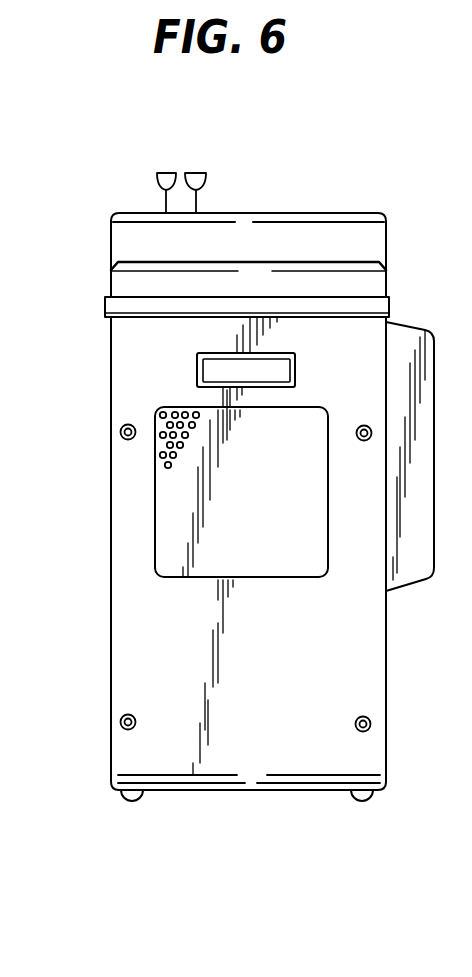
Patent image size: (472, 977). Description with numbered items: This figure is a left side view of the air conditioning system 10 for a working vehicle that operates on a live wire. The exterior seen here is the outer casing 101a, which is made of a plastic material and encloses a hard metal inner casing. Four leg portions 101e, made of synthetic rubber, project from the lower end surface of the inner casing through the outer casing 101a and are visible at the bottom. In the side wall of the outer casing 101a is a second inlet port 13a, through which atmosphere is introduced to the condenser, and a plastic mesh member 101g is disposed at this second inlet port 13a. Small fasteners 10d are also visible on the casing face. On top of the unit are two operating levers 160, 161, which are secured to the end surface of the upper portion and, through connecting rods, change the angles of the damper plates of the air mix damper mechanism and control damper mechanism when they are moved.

The air conditioning system 10 is at (232, 796).
The screws 10d is at (124, 716).
The second inlet port 13a is at (155, 531).
The outer casing 101a is at (318, 767).
The leg portions 101e is at (131, 801).
The mesh member 101g is at (170, 557).
The operating lever 160 is at (197, 173).
The operating lever 161 is at (152, 168).